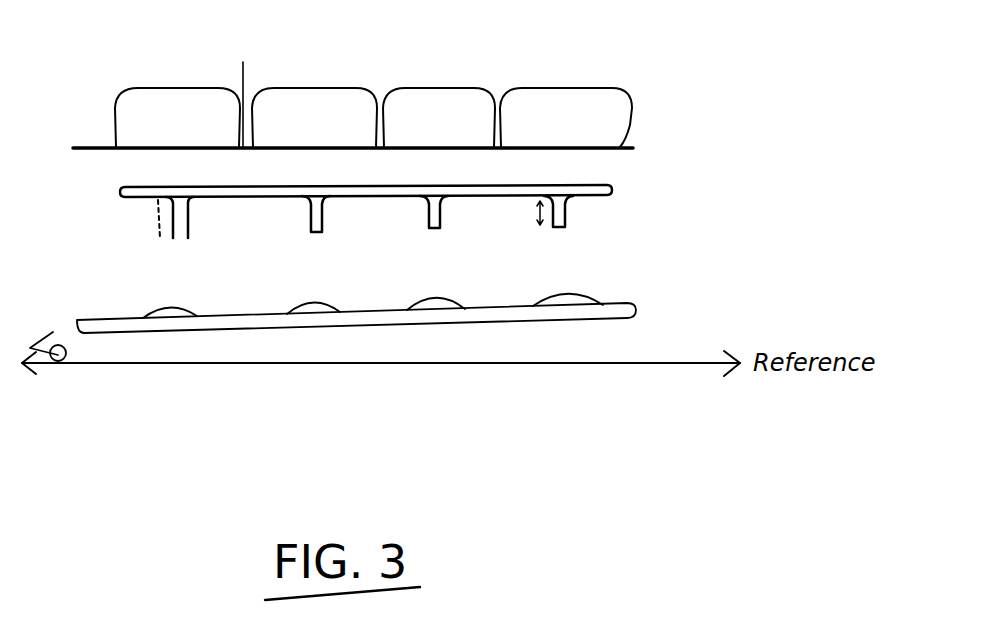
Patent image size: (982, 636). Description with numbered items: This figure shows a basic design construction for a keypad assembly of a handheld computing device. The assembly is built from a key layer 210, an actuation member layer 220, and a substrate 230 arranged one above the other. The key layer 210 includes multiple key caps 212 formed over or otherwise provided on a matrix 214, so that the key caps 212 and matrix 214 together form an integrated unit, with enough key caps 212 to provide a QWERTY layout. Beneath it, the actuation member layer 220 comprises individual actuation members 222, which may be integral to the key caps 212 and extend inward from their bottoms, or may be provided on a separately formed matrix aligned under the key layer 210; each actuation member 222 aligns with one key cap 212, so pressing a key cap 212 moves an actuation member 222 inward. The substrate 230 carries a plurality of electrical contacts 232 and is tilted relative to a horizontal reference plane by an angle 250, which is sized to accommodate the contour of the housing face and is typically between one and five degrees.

The key layer 210 is at (427, 75).
The key caps 212 is at (334, 106).
The matrix 214 is at (265, 87).
The actuation member layer 220 is at (450, 206).
The actuation members 222 is at (323, 216).
The substrate 230 is at (423, 287).
The electrical contacts 232 is at (330, 302).
The angle 250 is at (62, 363).